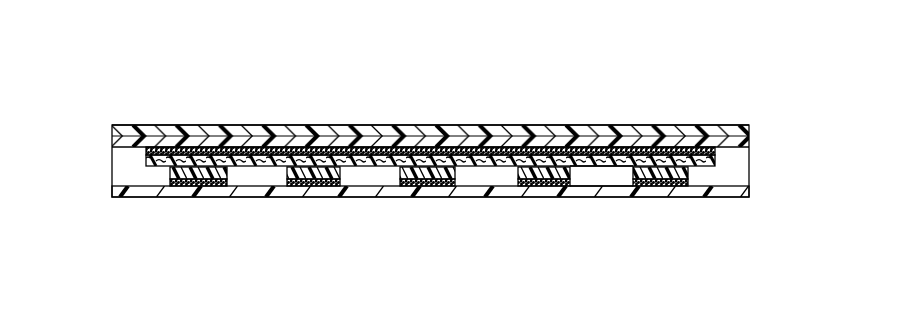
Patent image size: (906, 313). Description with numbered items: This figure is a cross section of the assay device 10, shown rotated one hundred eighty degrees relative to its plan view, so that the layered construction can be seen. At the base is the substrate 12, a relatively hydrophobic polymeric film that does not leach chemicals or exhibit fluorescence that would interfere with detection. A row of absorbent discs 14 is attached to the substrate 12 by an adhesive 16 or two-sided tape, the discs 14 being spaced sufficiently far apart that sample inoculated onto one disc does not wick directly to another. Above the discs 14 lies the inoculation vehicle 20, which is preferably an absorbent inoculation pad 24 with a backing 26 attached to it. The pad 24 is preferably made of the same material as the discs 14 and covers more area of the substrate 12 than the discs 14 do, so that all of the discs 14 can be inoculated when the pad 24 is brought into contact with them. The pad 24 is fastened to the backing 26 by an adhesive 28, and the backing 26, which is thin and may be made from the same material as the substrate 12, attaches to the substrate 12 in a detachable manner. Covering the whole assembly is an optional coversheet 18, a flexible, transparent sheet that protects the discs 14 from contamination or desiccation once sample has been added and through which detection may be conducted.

The assay device 10 is at (690, 72).
The substrate 12 is at (217, 190).
The discs 14 is at (577, 178).
The adhesive 16 is at (533, 181).
The coversheet 18 is at (602, 132).
The inoculation vehicle 20 is at (753, 126).
The inoculation pad 24 is at (147, 161).
The backing 26 is at (406, 143).
The adhesive 28 is at (477, 149).